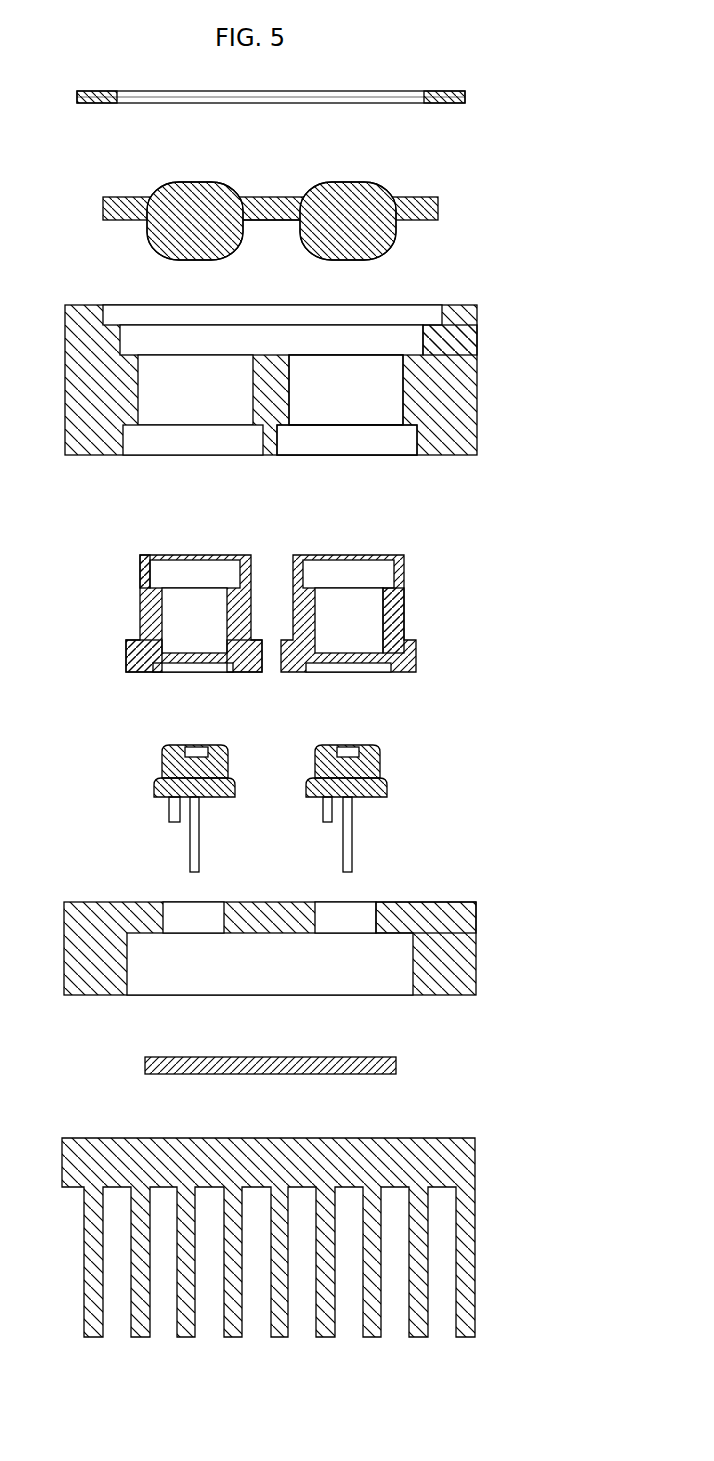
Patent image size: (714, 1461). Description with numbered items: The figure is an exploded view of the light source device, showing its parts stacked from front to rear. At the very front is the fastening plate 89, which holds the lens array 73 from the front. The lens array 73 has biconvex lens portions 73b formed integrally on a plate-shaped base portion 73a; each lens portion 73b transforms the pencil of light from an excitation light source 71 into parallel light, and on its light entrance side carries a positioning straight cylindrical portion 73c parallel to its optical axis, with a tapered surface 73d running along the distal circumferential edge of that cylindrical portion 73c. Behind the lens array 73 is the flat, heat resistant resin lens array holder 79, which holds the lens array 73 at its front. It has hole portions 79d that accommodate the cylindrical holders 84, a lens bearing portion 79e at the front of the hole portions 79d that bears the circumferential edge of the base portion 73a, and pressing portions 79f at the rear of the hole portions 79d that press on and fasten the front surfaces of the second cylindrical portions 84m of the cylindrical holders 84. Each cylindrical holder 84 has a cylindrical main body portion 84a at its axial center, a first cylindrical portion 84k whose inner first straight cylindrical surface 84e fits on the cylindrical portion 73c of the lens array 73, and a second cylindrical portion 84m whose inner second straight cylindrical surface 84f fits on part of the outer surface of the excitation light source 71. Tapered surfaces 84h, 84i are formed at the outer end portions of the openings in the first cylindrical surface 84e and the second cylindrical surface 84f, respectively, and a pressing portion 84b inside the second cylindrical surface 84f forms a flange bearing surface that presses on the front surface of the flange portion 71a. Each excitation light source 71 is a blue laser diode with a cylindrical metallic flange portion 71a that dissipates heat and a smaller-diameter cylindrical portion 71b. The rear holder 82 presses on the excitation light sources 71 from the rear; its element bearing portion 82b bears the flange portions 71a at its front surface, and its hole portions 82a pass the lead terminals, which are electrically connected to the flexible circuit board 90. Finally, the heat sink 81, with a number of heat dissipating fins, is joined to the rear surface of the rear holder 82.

The fastening plate 89 is at (466, 99).
The lens array 73 is at (342, 207).
The base portion 73a is at (122, 222).
The lens portion 73b is at (177, 183).
The positioning straight cylindrical portion 73c is at (391, 232).
The tapered surface 73d is at (300, 247).
The lens array holder 79 is at (334, 381).
The hole portion 79d is at (312, 408).
The lens bearing portion 79e is at (436, 326).
The pressing portion 79f is at (410, 428).
The cylindrical holder 84 is at (271, 619).
The cylindrical main body portion 84a is at (405, 600).
The pressing portion 84b is at (233, 672).
The first straight cylindrical surface 84e is at (392, 577).
The second straight cylindrical surface 84f is at (385, 665).
The tapered surface 84h is at (230, 557).
The tapered surface 84i is at (155, 672).
The first cylindrical portion 84k is at (140, 576).
The second cylindrical portion 84m is at (130, 652).
The excitation light source 71 is at (334, 794).
The flange portion 71a is at (388, 785).
The cylindrical portion 71b is at (378, 758).
The rear holder 82 is at (319, 922).
The hole portion 82a is at (358, 905).
The element bearing portion 82b is at (437, 905).
The flexible circuit board 90 is at (398, 1060).
The heat sink 81 is at (476, 1155).